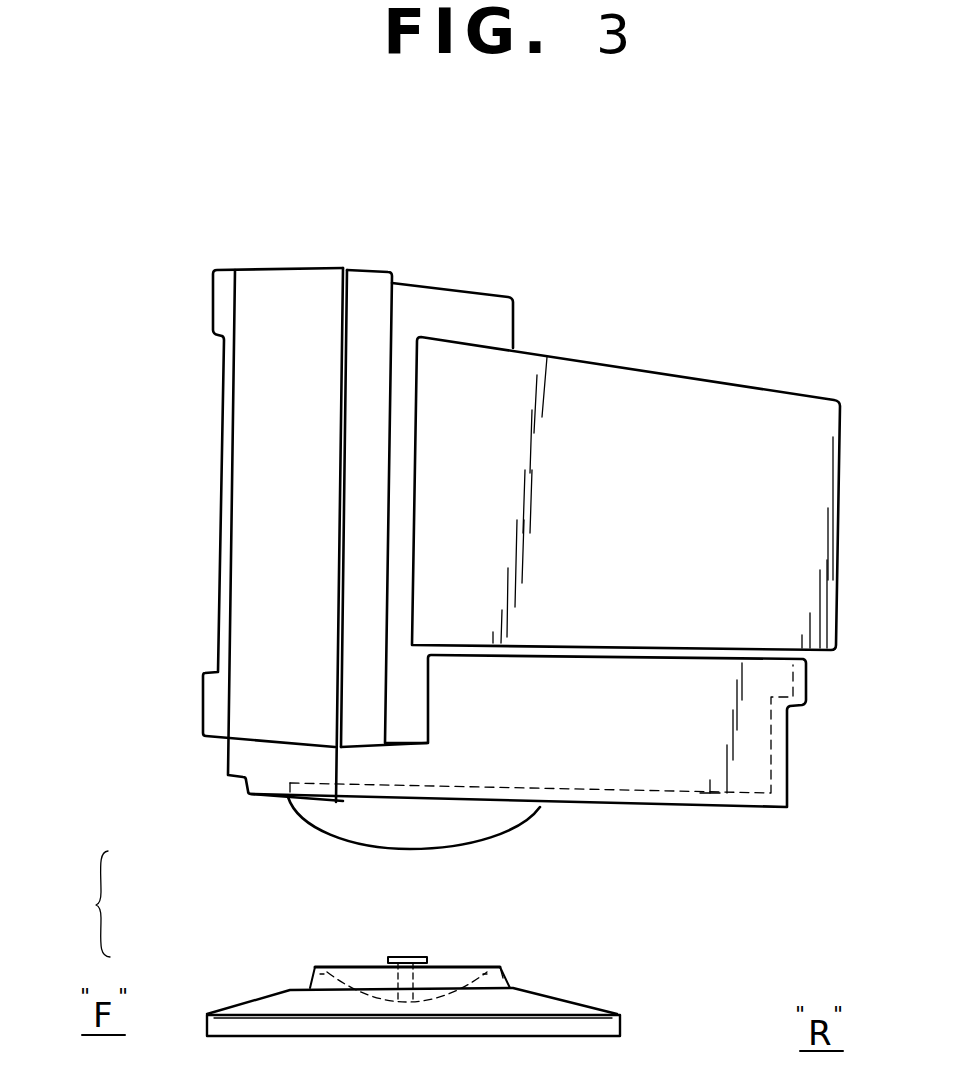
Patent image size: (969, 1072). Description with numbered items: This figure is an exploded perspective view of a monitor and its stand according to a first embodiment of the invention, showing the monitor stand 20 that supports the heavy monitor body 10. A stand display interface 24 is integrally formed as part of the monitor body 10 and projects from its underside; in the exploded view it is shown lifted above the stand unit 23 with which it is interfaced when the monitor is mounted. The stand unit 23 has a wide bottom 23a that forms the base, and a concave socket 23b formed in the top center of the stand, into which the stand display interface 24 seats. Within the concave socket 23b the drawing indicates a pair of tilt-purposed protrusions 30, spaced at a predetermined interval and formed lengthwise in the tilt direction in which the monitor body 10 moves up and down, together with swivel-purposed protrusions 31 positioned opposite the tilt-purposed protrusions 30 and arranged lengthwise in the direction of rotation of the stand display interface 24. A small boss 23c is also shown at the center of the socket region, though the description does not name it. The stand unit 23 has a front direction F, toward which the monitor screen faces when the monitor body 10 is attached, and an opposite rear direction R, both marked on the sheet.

The monitor body 10 is at (742, 757).
The monitor stand 20 is at (93, 911).
The stand unit 23 is at (431, 954).
The wide bottom 23a is at (612, 1029).
The concave socket 23b is at (495, 967).
The pivot boss 23c is at (418, 957).
The stand display interface 24 is at (313, 827).
The tilt-purposed protrusions 30 is at (319, 967).
The swivel-purposed protrusions 31 is at (493, 967).